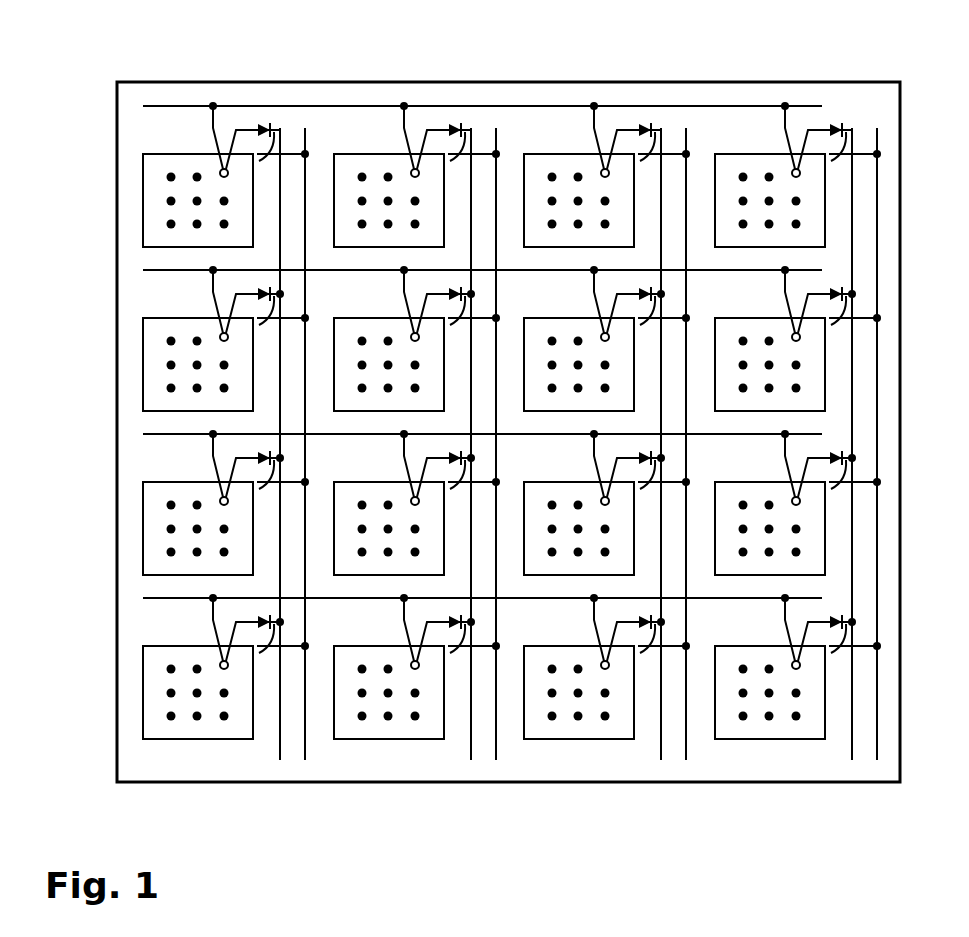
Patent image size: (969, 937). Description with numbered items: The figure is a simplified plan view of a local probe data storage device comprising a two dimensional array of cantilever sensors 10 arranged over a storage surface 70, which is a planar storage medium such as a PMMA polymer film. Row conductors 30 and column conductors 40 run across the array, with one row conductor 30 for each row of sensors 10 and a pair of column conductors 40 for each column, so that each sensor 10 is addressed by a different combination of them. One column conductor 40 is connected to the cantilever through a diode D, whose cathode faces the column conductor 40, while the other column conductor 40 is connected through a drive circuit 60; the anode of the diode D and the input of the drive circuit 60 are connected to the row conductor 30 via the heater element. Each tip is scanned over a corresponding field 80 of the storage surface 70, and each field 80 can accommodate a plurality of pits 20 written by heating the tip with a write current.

The cantilever sensor 10 is at (398, 150).
The pit 20 is at (170, 177).
The row conductor 30 is at (172, 105).
The column conductor 40 is at (278, 752).
The drive circuit 60 is at (274, 130).
The storage surface 70 is at (116, 363).
The field 80 is at (163, 247).
The diode D is at (458, 124).